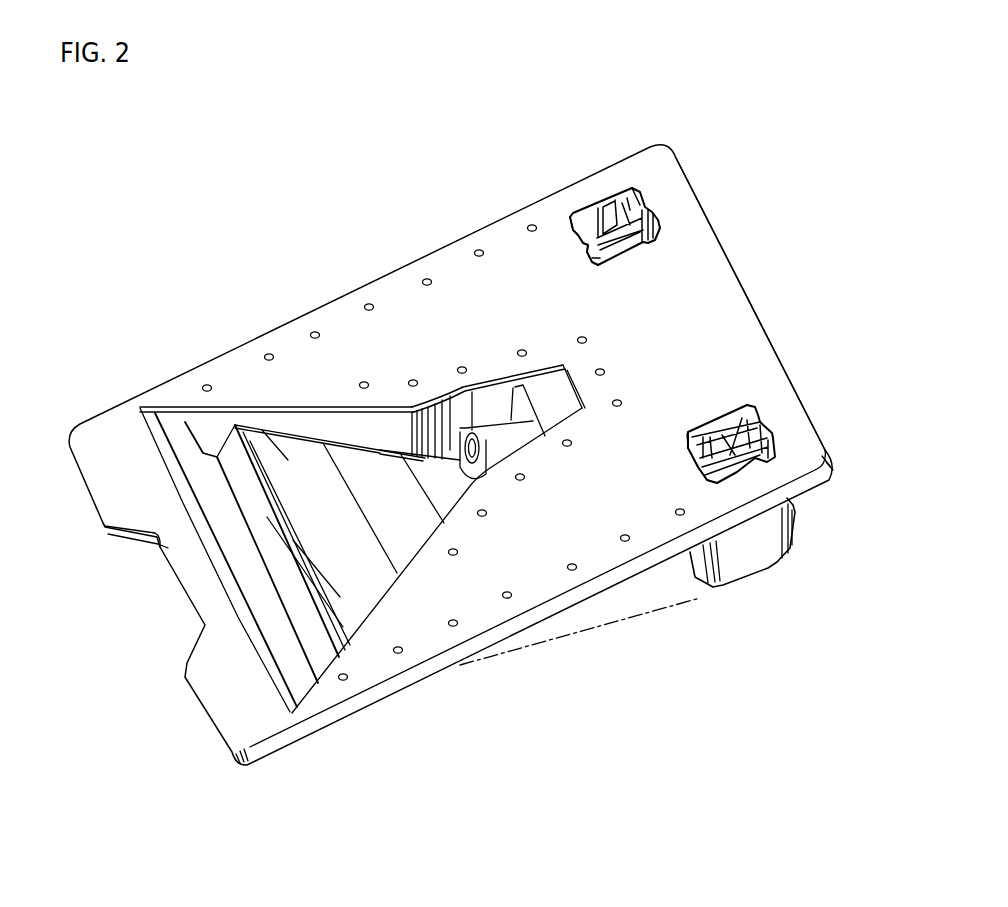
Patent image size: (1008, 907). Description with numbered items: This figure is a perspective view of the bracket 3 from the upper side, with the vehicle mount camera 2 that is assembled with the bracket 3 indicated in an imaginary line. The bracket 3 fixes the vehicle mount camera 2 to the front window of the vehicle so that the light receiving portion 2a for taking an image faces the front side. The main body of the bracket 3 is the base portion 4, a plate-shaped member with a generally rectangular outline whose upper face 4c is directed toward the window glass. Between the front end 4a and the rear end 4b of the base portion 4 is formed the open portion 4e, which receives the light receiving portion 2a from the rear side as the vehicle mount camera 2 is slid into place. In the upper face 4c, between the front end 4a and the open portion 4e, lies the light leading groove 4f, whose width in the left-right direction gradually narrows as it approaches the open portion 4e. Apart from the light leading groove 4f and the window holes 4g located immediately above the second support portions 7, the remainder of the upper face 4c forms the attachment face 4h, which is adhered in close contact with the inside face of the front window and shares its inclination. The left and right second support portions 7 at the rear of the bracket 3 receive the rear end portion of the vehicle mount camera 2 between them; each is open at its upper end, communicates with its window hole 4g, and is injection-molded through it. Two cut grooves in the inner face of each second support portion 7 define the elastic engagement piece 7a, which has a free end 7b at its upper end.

The vehicle mount camera 2 is at (632, 613).
The light receiving portion 2a is at (460, 467).
The bracket 3 is at (597, 150).
The base portion 4 is at (438, 453).
The front end 4a is at (83, 482).
The rear end 4b is at (767, 330).
The upper face 4c is at (727, 290).
The open portion 4e is at (577, 367).
The light leading groove 4f is at (283, 458).
The window hole 4g is at (583, 220).
The attachment face 4h is at (388, 297).
The second support portion 7 is at (768, 550).
The elastic engagement piece 7a is at (613, 230).
The free end 7b is at (760, 420).